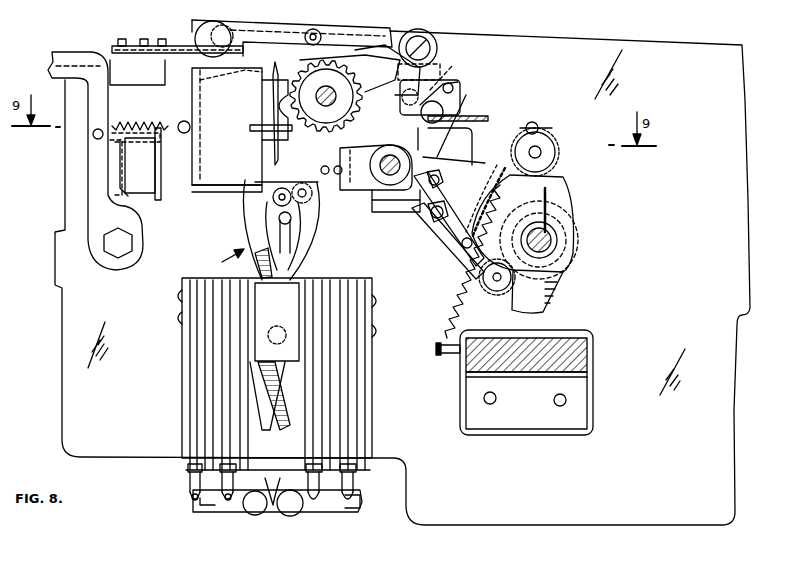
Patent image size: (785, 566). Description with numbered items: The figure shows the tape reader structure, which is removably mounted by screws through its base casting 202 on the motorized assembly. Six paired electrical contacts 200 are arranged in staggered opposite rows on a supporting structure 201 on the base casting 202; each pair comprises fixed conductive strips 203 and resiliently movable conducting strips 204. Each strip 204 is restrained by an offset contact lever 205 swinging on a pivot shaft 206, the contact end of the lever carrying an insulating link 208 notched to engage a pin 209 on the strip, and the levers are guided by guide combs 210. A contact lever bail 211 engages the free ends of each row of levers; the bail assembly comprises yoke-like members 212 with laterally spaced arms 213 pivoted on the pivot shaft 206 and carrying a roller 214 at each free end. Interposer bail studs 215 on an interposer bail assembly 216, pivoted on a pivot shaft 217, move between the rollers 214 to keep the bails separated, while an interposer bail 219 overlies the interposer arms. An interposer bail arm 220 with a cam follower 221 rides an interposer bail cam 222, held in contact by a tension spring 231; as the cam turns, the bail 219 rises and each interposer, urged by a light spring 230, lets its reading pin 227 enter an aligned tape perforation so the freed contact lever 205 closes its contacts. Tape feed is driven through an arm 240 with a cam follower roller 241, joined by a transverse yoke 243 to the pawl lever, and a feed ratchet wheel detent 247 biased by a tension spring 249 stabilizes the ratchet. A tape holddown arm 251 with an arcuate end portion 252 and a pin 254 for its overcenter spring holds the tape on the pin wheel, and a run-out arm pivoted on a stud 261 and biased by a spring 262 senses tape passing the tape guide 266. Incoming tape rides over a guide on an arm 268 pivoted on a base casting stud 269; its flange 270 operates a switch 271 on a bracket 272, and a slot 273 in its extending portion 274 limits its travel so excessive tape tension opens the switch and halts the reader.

The paired electrical contacts 200 is at (222, 482).
The supporting structure 201 is at (182, 318).
The base casting 202 is at (62, 386).
The fixed conductive strips 203 is at (205, 392).
The resiliently movable conducting strips 204 is at (188, 478).
The offset contact lever 205 is at (273, 508).
The pivot shaft 206 is at (285, 328).
The insulating link 208 is at (203, 506).
The pin 209 is at (190, 500).
The guide combs 210 is at (262, 420).
The contact lever bail 211 is at (264, 207).
The yoke-like members 212 is at (220, 260).
The laterally spaced arms 213 is at (248, 232).
The roller 214 is at (248, 172).
The interposer bail studs 215 is at (262, 190).
The interposer bail assembly 216 is at (390, 212).
The pivot shaft 217 is at (430, 146).
The interposer bail 219 is at (366, 152).
The interposer bail arm 220 is at (510, 148).
The cam follower 221 is at (554, 143).
The interposer bail cam 222 is at (565, 185).
The reading pin 227 is at (276, 107).
The light spring 230 is at (466, 156).
The tension spring 231 is at (458, 281).
The arm 240 is at (448, 245).
The cam follower roller 241 is at (500, 295).
The transverse yoke 243 is at (425, 236).
The feed ratchet wheel detent 247 is at (204, 80).
The tension spring 249 is at (143, 118).
The tape holddown arm 251 is at (452, 92).
The arcuate end portion 252 is at (550, 298).
The pin 254 is at (440, 80).
The stud 261 is at (438, 50).
The spring 262 is at (386, 31).
The tape guide 266 is at (178, 46).
The arm 268 is at (64, 52).
The base casting stud 269 is at (120, 252).
The flange 270 is at (120, 165).
The switch 271 is at (143, 194).
The bracket 272 is at (160, 175).
The slot 273 is at (160, 134).
The extending portion 274 is at (150, 122).